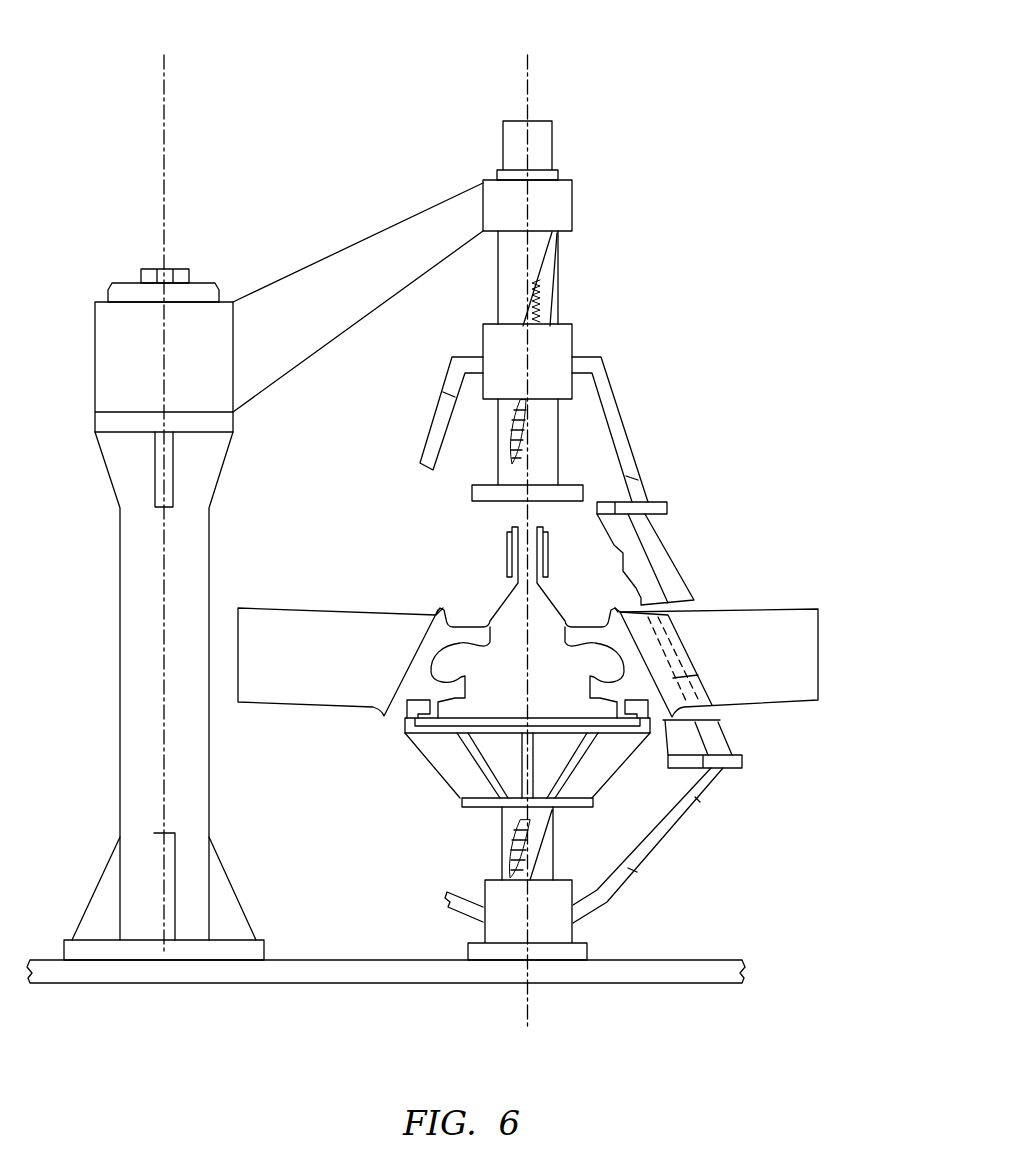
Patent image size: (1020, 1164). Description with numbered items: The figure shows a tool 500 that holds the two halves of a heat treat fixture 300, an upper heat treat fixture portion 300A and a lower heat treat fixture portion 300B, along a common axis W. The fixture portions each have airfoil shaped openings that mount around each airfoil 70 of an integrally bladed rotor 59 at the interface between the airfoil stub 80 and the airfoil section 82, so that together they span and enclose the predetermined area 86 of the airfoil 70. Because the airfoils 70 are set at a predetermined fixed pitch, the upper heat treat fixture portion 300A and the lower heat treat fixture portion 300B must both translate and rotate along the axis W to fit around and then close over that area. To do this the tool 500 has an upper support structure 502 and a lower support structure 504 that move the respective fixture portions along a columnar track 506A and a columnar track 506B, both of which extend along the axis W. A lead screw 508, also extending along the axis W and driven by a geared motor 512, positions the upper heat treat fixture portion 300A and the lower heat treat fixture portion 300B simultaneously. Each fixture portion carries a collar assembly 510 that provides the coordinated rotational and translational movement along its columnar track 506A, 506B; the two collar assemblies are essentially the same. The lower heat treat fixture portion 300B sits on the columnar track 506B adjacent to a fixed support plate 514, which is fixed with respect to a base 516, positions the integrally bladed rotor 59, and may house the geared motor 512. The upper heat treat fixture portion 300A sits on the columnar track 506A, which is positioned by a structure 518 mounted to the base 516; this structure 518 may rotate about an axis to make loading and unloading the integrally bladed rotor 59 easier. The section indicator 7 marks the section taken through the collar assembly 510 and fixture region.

The tool 500 is at (372, 92).
The axis W is at (528, 70).
The geared motor 512 is at (518, 143).
The structure 518 is at (391, 222).
The columnar track 506A is at (548, 290).
The collar assembly 510 is at (558, 350).
The upper support structure 502 is at (384, 412).
The section line 7- 7 is at (443, 367).
The lead screw 508 is at (515, 425).
The upper heat treat fixture portion 300A is at (670, 561).
The heat treat fixture 300 is at (741, 635).
The integrally bladed rotor 59 is at (459, 614).
The airfoil stub 80 is at (626, 611).
The predetermined area 86 is at (682, 655).
The airfoil section 82 is at (792, 689).
The airfoil 70 is at (830, 663).
The lower heat treat fixture portion 300B is at (712, 738).
The fixed support plate 514 is at (590, 777).
The columnar track 506B is at (500, 860).
The lower support structure 504 is at (680, 869).
The base 516 is at (660, 967).